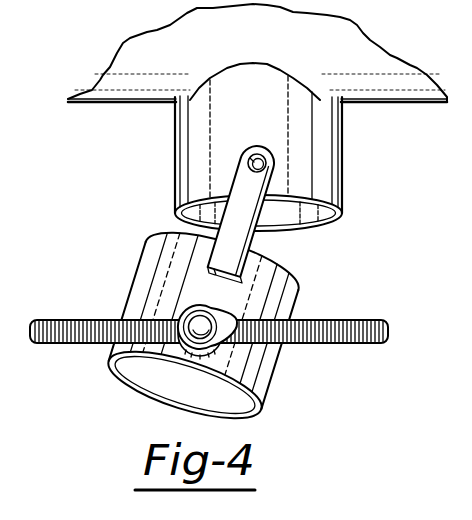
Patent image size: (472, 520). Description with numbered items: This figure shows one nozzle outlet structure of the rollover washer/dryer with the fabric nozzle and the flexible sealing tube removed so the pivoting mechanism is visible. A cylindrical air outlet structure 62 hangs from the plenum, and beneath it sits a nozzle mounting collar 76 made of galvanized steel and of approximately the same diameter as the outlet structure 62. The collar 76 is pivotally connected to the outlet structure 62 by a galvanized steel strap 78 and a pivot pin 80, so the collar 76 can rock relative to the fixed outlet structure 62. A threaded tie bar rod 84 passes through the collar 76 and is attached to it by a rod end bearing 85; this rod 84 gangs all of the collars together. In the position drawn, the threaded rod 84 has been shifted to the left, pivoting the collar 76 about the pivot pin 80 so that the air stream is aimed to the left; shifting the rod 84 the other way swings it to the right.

The air outlet structure 62 is at (332, 150).
The nozzle mounting collar 76 is at (262, 300).
The strap 78 is at (240, 187).
The pivot pin 80 is at (257, 154).
The threaded tie bar rod 84 is at (380, 320).
The rod end bearing 85 is at (212, 344).